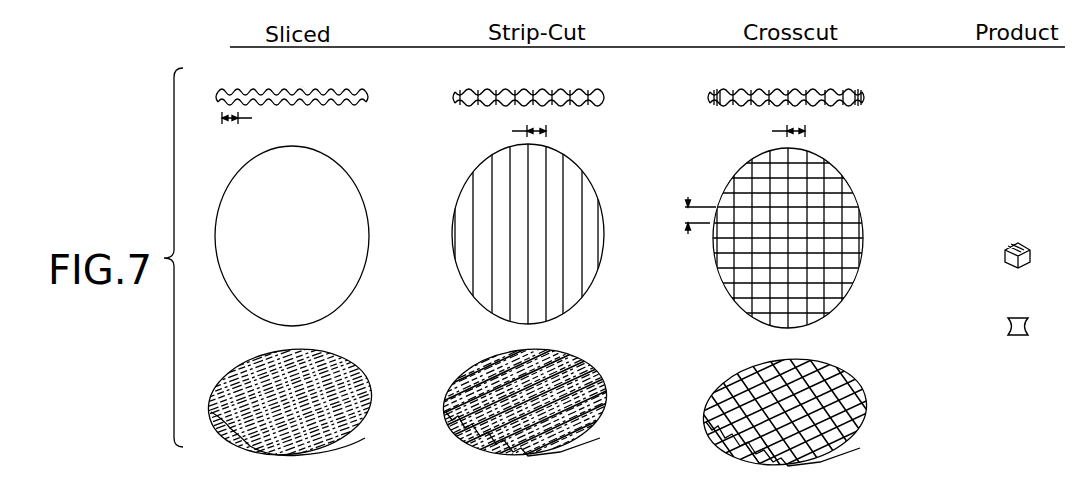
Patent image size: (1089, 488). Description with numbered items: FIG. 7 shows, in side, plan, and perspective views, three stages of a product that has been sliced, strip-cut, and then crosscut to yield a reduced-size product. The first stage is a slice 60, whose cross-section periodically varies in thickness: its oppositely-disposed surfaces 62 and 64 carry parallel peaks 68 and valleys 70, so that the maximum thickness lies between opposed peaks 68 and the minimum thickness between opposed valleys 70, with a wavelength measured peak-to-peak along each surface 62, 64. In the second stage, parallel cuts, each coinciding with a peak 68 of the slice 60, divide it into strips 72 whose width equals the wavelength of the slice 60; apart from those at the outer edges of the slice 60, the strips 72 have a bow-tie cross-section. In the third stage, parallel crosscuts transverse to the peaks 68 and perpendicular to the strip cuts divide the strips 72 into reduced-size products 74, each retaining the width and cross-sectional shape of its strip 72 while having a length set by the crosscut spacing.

The slice 60 is at (278, 255).
The surface 62 is at (298, 88).
The surface 64 is at (362, 103).
The peaks 68 is at (314, 81).
The valleys 70 is at (343, 91).
The strips 72 is at (570, 200).
The reduced-size products 74 is at (848, 217).